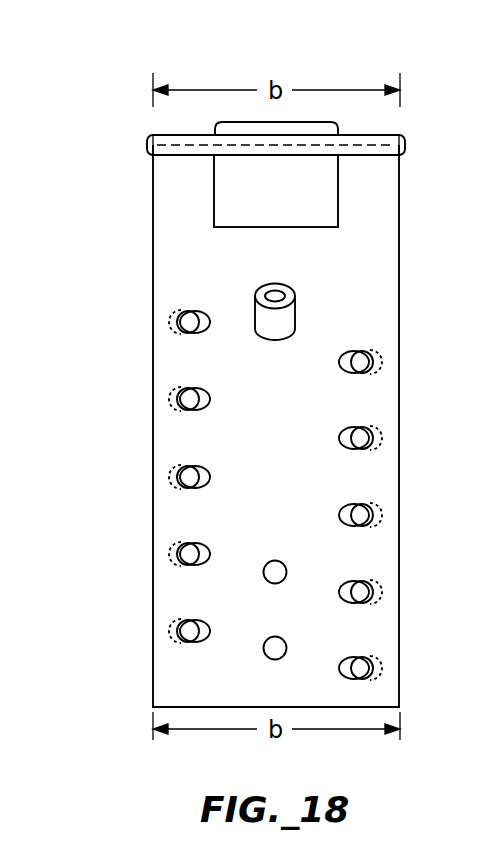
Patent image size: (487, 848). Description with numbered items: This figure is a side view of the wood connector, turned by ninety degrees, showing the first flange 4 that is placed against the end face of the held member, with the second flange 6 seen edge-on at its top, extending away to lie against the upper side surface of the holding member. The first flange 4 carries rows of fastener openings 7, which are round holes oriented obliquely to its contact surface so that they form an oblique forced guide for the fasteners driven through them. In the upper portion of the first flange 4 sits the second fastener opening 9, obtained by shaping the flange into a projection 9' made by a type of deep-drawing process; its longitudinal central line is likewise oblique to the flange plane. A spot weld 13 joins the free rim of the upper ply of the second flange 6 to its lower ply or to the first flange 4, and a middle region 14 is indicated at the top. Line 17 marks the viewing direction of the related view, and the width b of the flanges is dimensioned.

The first flange 4 is at (383, 407).
The second flange 6 is at (393, 122).
The fastener openings 7 is at (183, 390).
The second fastener opening 9 is at (347, 289).
The projection 9' is at (355, 327).
The spot weld 13 is at (150, 140).
The middle region 14 is at (287, 122).
The line 17— 17 is at (277, 69).